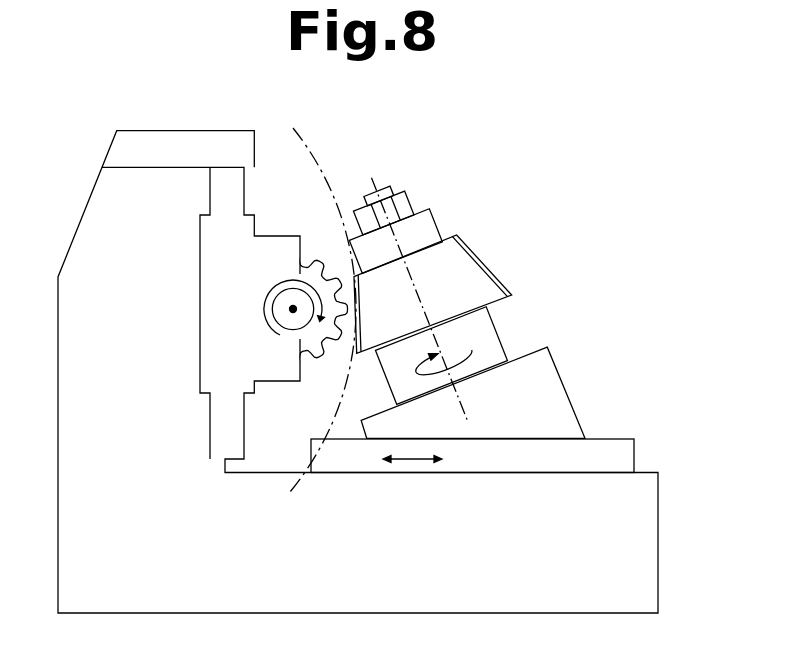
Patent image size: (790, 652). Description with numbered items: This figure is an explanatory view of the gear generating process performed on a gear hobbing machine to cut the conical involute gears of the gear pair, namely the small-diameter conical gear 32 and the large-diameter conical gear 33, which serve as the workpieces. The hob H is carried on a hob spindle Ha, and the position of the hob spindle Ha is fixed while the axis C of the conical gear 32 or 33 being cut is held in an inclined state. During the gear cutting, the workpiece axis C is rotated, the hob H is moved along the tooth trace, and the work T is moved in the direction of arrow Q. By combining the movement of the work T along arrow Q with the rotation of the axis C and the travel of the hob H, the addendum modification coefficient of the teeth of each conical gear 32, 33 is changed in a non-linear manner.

The hob H is at (322, 253).
The hob spindle Ha is at (293, 309).
The small-diameter conical involute gear 32 is at (472, 270).
The large-diameter conical involute gear 33 is at (473, 248).
The axis of the conical gear C is at (466, 402).
The work T is at (634, 448).
The direction of arrow Q is at (415, 460).